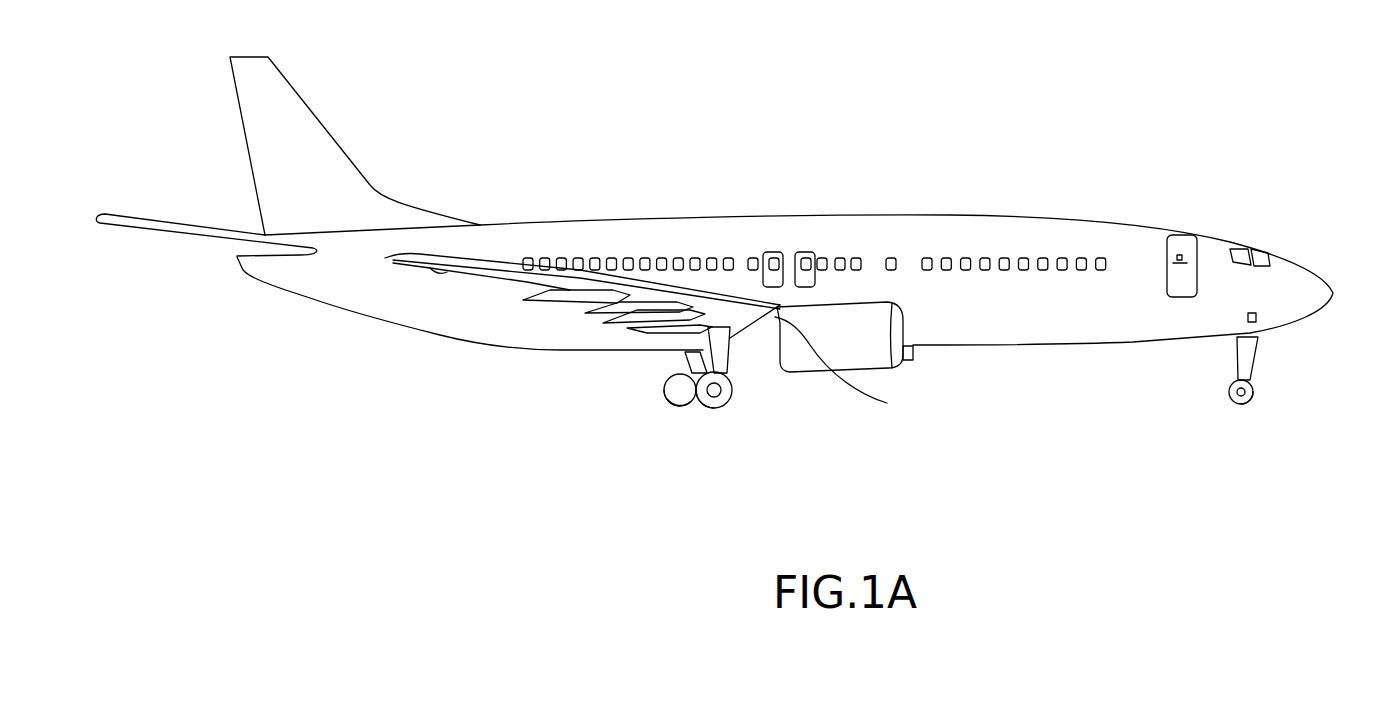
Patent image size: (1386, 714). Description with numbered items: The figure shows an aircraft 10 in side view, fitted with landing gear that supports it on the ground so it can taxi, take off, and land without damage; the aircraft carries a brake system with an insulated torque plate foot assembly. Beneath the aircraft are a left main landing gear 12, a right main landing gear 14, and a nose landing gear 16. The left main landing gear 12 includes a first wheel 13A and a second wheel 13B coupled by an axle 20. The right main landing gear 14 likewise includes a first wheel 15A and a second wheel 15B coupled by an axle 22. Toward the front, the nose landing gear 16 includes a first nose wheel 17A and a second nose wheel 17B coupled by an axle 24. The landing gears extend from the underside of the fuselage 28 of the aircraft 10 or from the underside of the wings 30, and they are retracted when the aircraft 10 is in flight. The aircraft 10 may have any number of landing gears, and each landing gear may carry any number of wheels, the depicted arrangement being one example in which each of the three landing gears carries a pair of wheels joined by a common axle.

The aircraft 10 is at (895, 115).
The left main landing gear 12 is at (677, 415).
The first wheel 13A is at (664, 382).
The second wheel 13B is at (676, 404).
The right main landing gear 14 is at (750, 443).
The first wheel 15A is at (733, 388).
The second wheel 15B is at (695, 408).
The nose landing gear 16 is at (1241, 398).
The first nose wheel 17A is at (1230, 391).
The second nose wheel 17B is at (1251, 393).
The axle 20 is at (667, 396).
The axle 22 is at (724, 420).
The axle 24 is at (1245, 404).
The fuselage 28 is at (1230, 342).
The wings 30 is at (817, 361).